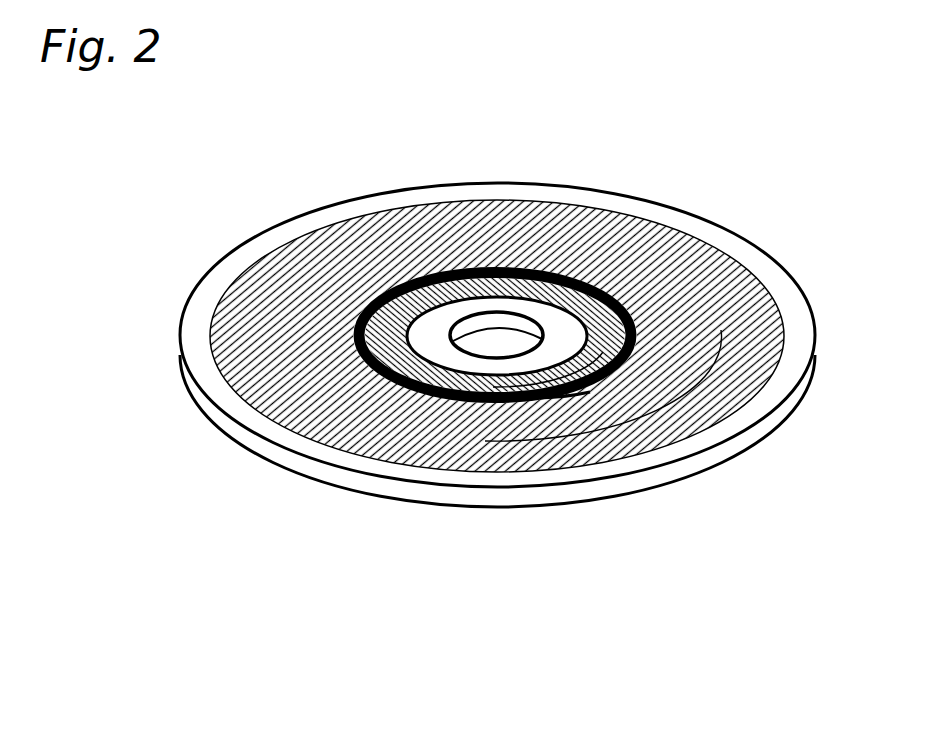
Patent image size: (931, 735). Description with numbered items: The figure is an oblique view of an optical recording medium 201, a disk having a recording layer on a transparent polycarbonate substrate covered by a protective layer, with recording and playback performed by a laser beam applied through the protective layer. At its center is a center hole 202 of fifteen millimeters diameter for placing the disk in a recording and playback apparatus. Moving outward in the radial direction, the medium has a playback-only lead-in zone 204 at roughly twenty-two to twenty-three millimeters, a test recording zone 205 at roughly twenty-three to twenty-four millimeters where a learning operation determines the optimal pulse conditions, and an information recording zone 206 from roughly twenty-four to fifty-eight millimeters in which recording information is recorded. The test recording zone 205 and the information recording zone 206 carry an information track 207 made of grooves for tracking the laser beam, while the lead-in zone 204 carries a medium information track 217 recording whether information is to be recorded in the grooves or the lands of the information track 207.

The optical recording medium 201 is at (221, 246).
The center hole 202 is at (479, 312).
The lead-in zone 204 is at (597, 307).
The test recording zone 205 is at (628, 303).
The information recording zone 206 is at (708, 316).
The information track 207 is at (657, 412).
The medium information track 217 is at (567, 400).